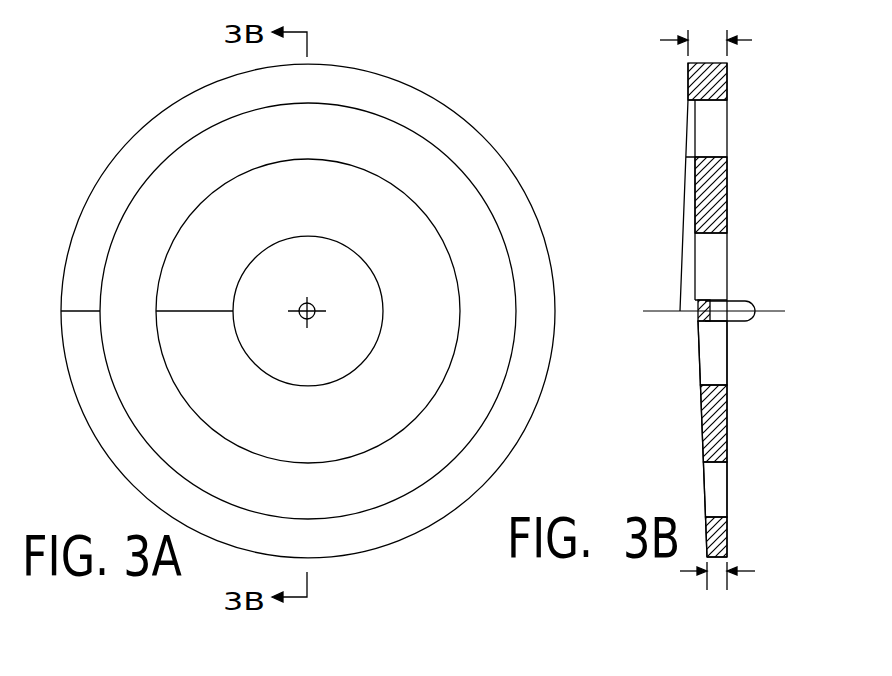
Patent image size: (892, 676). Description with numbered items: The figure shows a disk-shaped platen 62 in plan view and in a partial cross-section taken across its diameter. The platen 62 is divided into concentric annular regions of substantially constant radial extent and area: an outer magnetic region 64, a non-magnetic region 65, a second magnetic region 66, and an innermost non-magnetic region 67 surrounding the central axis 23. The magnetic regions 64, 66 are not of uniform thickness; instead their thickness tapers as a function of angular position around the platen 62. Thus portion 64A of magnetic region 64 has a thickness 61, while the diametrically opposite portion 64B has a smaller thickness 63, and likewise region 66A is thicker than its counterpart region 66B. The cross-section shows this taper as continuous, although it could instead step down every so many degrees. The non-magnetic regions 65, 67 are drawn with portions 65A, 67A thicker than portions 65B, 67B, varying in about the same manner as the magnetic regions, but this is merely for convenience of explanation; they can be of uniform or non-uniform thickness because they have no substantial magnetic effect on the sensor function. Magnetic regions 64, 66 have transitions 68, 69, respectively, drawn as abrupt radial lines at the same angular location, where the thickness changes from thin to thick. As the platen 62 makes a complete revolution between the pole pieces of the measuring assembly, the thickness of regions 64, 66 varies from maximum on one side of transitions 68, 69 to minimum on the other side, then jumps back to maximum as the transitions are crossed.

In FIG. 3A, the axis 23 is at (297, 323).
In FIG. 3B, the axis 23 is at (733, 300).
In FIG. 3B, the thickness 61 is at (708, 42).
In FIG. 3A, the disk-shaped platen 62 is at (100, 147).
In FIG. 3B, the disk-shaped platen 62 is at (592, 126).
In FIG. 3B, the thickness 63 is at (717, 588).
In FIG. 3A, the magnetic region 64 is at (308, 311).
In FIG. 3B, the magnetic region 64 is at (703, 310).
In FIG. 3A, the portion of magnetic region 64 64A is at (328, 94).
In FIG. 3B, the portion of magnetic region 64 64A is at (697, 90).
In FIG. 3A, the portion of magnetic region 64 64B is at (328, 549).
In FIG. 3B, the portion of magnetic region 64 64B is at (728, 536).
In FIG. 3A, the non-magnetic region 65 is at (308, 311).
In FIG. 3B, the non-magnetic region 65 is at (705, 308).
In FIG. 3A, the portion of non-magnetic region 65 65A is at (328, 148).
In FIG. 3B, the portion of non-magnetic region 65 65A is at (703, 137).
In FIG. 3A, the portion of non-magnetic region 65 65B is at (328, 504).
In FIG. 3B, the portion of non-magnetic region 65 65B is at (716, 490).
In FIG. 3A, the magnetic region 66 is at (308, 311).
In FIG. 3B, the magnetic region 66 is at (706, 309).
In FIG. 3A, the region 66A is at (328, 220).
In FIG. 3B, the region 66A is at (705, 203).
In FIG. 3A, the region 66B is at (328, 437).
In FIG. 3B, the region 66B is at (715, 420).
In FIG. 3A, the non-magnetic region 67 is at (308, 311).
In FIG. 3B, the non-magnetic region 67 is at (706, 313).
In FIG. 3A, the portion of non-magnetic region 67 67A is at (328, 276).
In FIG. 3B, the portion of non-magnetic region 67 67A is at (708, 252).
In FIG. 3A, the portion of non-magnetic region 67 67B is at (328, 373).
In FIG. 3B, the portion of non-magnetic region 67 67B is at (681, 357).
In FIG. 3A, the transition 68 is at (78, 308).
In FIG. 3B, the transition 68 is at (680, 313).
In FIG. 3A, the transition 69 is at (189, 308).
In FIG. 3B, the transition 69 is at (692, 315).